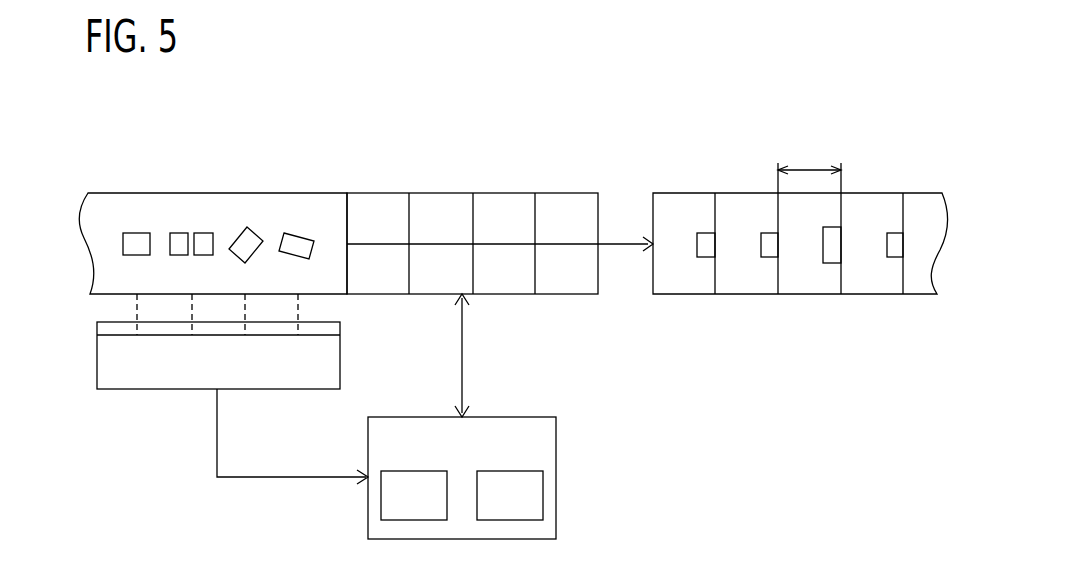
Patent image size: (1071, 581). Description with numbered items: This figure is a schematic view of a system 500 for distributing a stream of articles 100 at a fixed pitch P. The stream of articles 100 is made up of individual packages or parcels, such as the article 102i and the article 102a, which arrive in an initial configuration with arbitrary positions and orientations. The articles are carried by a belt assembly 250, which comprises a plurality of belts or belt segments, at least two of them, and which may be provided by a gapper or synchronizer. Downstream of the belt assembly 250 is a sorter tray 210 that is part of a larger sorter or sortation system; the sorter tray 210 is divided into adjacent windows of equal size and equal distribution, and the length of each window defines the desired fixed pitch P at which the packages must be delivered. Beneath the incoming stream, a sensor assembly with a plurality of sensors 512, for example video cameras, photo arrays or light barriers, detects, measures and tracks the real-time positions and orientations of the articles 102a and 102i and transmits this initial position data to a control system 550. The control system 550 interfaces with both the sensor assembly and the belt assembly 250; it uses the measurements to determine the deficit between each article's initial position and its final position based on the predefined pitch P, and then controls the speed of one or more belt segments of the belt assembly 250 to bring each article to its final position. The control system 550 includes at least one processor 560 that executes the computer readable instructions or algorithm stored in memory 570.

The system 500 is at (598, 107).
The stream of articles 100 is at (207, 190).
The article 102i is at (137, 232).
The article 102a is at (300, 232).
The belt assembly 250 is at (455, 192).
The sorter tray 210 is at (733, 190).
The fixed pitch P is at (809, 167).
The sensors 512 is at (112, 330).
The control system 550 is at (500, 478).
The processor 560 is at (414, 495).
The memory 570 is at (510, 495).